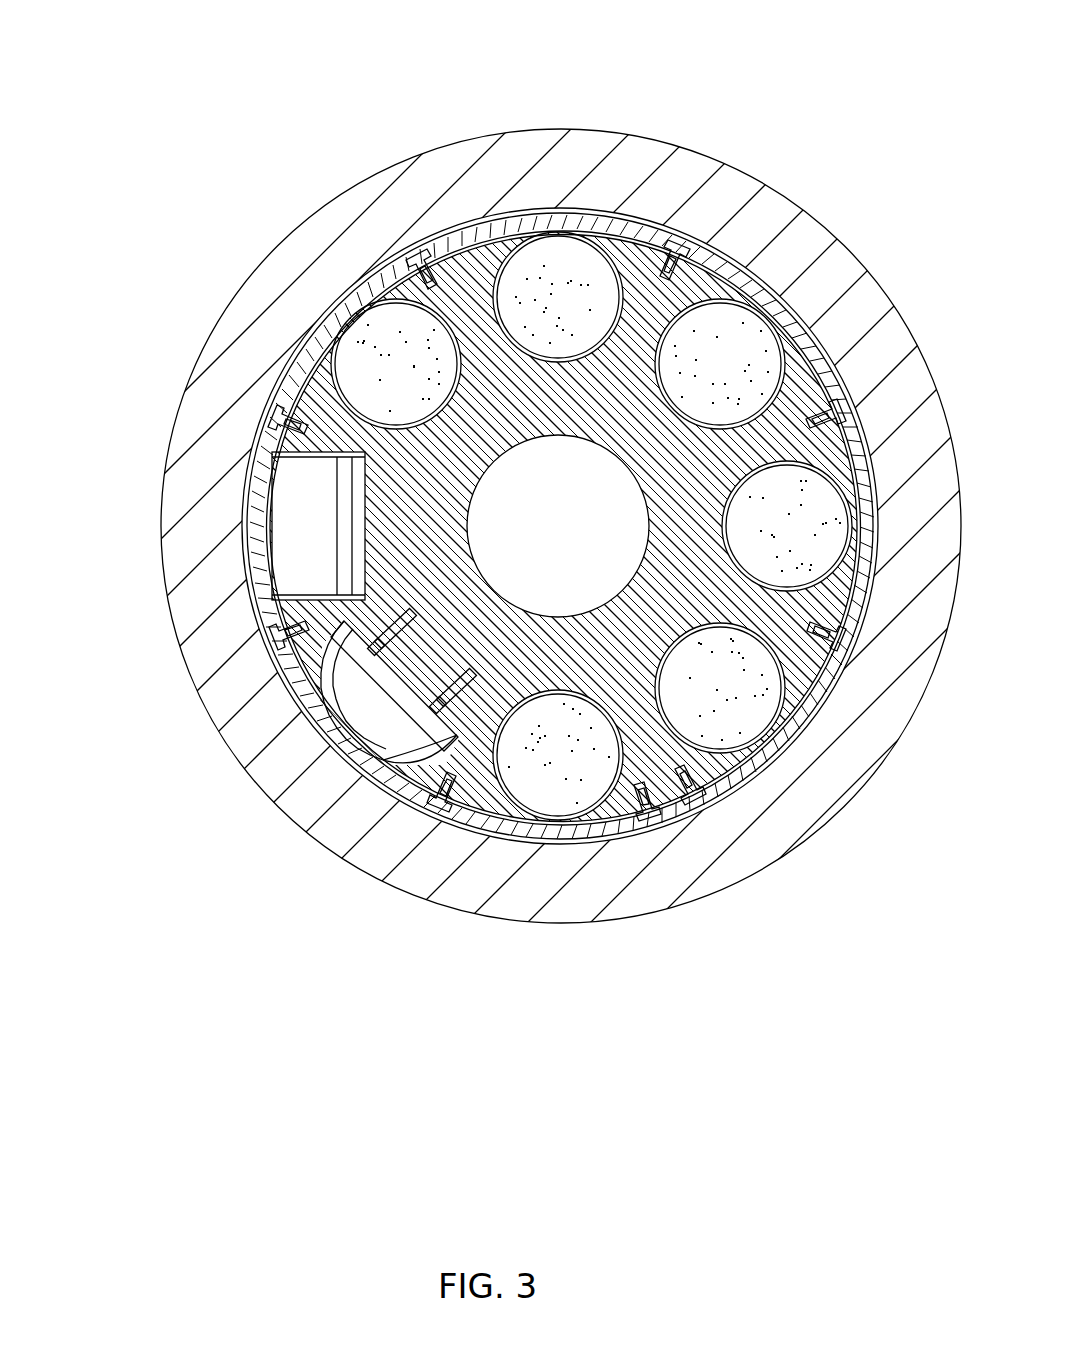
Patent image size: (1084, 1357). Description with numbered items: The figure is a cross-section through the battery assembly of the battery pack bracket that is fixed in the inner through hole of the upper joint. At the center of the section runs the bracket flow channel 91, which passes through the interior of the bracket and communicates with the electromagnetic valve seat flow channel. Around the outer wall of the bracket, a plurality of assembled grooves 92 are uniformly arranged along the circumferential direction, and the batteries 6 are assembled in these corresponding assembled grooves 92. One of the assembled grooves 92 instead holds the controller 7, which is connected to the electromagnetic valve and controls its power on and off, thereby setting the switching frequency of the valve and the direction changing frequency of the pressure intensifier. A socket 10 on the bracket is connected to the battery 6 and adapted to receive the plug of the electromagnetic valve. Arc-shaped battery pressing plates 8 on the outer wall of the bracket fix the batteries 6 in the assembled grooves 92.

The battery 6 is at (518, 461).
The controller 7 is at (225, 476).
The arc-shaped battery pressing plate 8 is at (461, 526).
The socket 10 is at (261, 707).
The bracket flow channel 91 is at (560, 527).
The assembled groove 92 is at (505, 250).